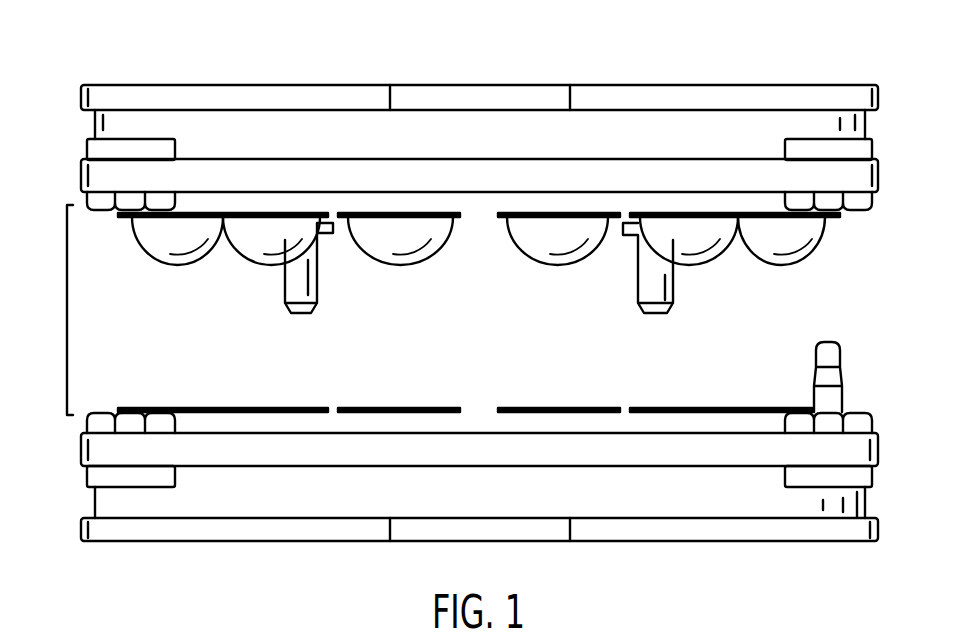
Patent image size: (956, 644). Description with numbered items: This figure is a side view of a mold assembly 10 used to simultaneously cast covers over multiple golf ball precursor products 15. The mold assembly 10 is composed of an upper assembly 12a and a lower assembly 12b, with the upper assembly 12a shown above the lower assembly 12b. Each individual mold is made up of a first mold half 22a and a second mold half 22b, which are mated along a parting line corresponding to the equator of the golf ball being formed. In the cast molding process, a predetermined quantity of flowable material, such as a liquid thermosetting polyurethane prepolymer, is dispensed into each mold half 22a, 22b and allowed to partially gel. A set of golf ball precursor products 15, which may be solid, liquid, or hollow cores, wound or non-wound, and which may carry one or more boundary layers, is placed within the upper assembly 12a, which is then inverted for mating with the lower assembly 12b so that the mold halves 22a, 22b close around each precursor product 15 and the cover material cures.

The mold assembly 10 is at (753, 33).
The upper assembly 12a is at (208, 62).
The lower assembly 12b is at (749, 566).
The golf ball precursor product 15 is at (170, 266).
The first mold half 22a is at (344, 219).
The second mold half 22b is at (368, 407).